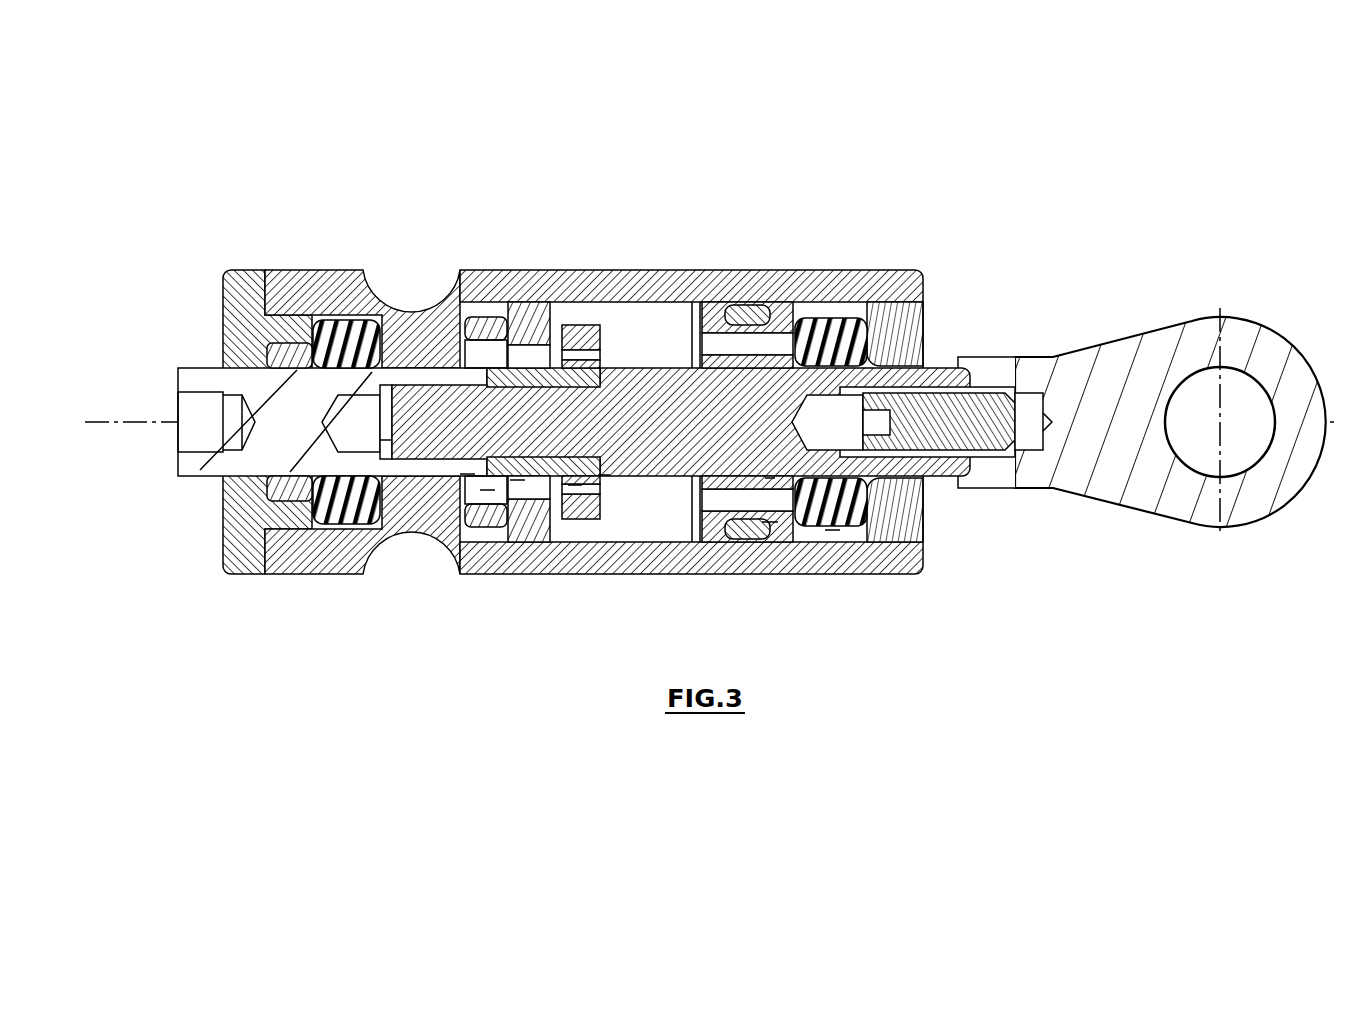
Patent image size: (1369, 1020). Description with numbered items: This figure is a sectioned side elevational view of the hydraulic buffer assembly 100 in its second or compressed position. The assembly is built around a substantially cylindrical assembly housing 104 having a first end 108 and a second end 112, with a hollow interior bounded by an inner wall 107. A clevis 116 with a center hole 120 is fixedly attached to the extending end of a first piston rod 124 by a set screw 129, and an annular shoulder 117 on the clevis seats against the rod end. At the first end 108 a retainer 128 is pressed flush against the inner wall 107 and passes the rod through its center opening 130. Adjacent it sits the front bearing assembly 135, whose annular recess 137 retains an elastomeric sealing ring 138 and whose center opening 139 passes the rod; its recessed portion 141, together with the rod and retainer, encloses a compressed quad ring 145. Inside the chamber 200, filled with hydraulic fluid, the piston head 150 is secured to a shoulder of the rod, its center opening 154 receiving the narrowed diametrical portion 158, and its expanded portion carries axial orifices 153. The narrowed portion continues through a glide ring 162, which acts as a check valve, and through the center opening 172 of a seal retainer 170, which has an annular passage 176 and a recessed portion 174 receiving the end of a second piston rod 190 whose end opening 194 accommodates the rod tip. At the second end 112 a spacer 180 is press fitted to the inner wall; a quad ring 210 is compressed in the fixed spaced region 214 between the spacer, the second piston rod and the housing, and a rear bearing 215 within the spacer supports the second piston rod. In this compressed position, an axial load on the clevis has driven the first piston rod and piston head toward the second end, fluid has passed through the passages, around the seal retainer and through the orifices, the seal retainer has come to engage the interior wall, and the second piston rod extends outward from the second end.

The hydraulic buffer assembly 100 is at (321, 92).
The assembly housing 104 is at (668, 270).
The inner wall 107 is at (625, 330).
The first end 108 is at (925, 555).
The second end 112 is at (215, 368).
The clevis 116 is at (1170, 419).
The annular shoulder 117 is at (985, 357).
The center hole 120 is at (1232, 447).
The first piston rod 124 is at (950, 368).
The retainer 128 is at (908, 312).
The set screw 129 is at (1000, 447).
The center opening 130 is at (927, 480).
The front bearing assembly 135 is at (838, 322).
The annular recess 137 is at (770, 522).
The sealing ring 138 is at (770, 316).
The center opening 139 is at (765, 478).
The recessed portion 141 is at (866, 322).
The quad ring 145 is at (832, 530).
The piston head 150 is at (585, 327).
The orifices 153 is at (575, 485).
The center opening 154 is at (600, 475).
The narrowed diametrical portion 158 is at (467, 472).
The glide ring 162 is at (550, 303).
The seal retainer 170 is at (493, 315).
The center opening 172 is at (517, 480).
The recessed portion 174 is at (470, 318).
The annular passage 176 is at (487, 490).
The spacer 180 is at (248, 268).
The second piston rod 190 is at (483, 365).
The end opening 194 is at (385, 442).
The chamber 200 is at (695, 300).
The quad ring 210 is at (352, 320).
The fixed spaced region 214 is at (302, 505).
The rear bearing 215 is at (268, 345).